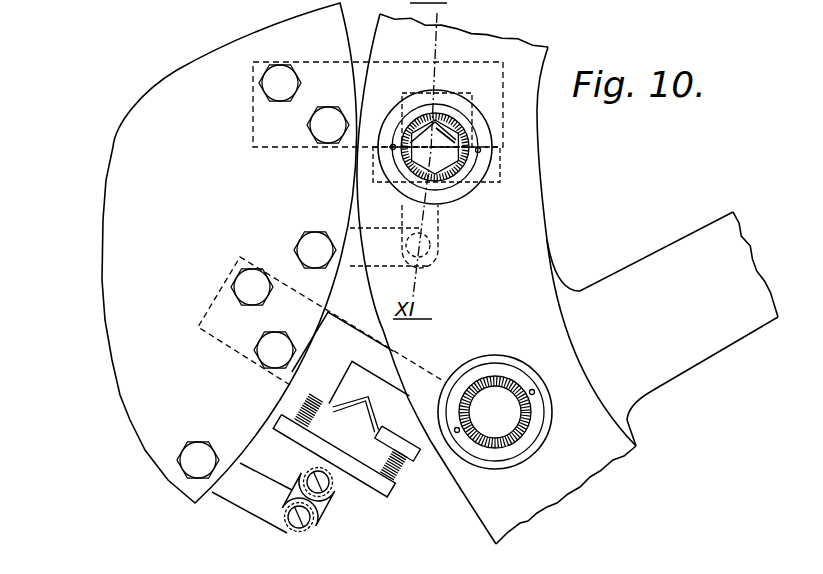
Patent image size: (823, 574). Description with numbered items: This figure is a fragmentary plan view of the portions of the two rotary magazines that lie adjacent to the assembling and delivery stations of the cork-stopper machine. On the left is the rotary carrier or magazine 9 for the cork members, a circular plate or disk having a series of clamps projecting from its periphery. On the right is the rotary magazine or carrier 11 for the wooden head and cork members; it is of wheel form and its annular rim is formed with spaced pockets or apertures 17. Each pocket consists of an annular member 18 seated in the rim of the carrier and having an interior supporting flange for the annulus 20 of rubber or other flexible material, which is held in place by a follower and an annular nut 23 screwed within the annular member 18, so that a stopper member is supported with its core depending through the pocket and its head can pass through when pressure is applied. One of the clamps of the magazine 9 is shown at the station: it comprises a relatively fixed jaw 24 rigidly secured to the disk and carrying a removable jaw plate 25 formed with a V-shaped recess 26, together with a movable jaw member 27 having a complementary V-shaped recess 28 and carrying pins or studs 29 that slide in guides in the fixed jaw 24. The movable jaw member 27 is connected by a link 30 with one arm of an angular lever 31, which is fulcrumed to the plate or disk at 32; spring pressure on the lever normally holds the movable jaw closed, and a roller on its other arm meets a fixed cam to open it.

The rotary carrier or magazine 9 is at (302, 253).
The rotary magazine or carrier 11 is at (564, 279).
The pockets or apertures 17 is at (495, 412).
The annular member 18 is at (487, 128).
The annulus 20 is at (463, 172).
The annular nut 23 is at (481, 150).
The fixed jaw 24 is at (342, 342).
The removable jaw plate 25 is at (369, 382).
The V-shaped recess 26 is at (356, 417).
The movable jaw member 27 is at (386, 488).
The complementary V-shaped recess 28 is at (379, 443).
The pins or studs 29 is at (392, 462).
The link 30 is at (316, 510).
The angular lever 31 is at (248, 505).
The fulcrum 32 is at (198, 450).